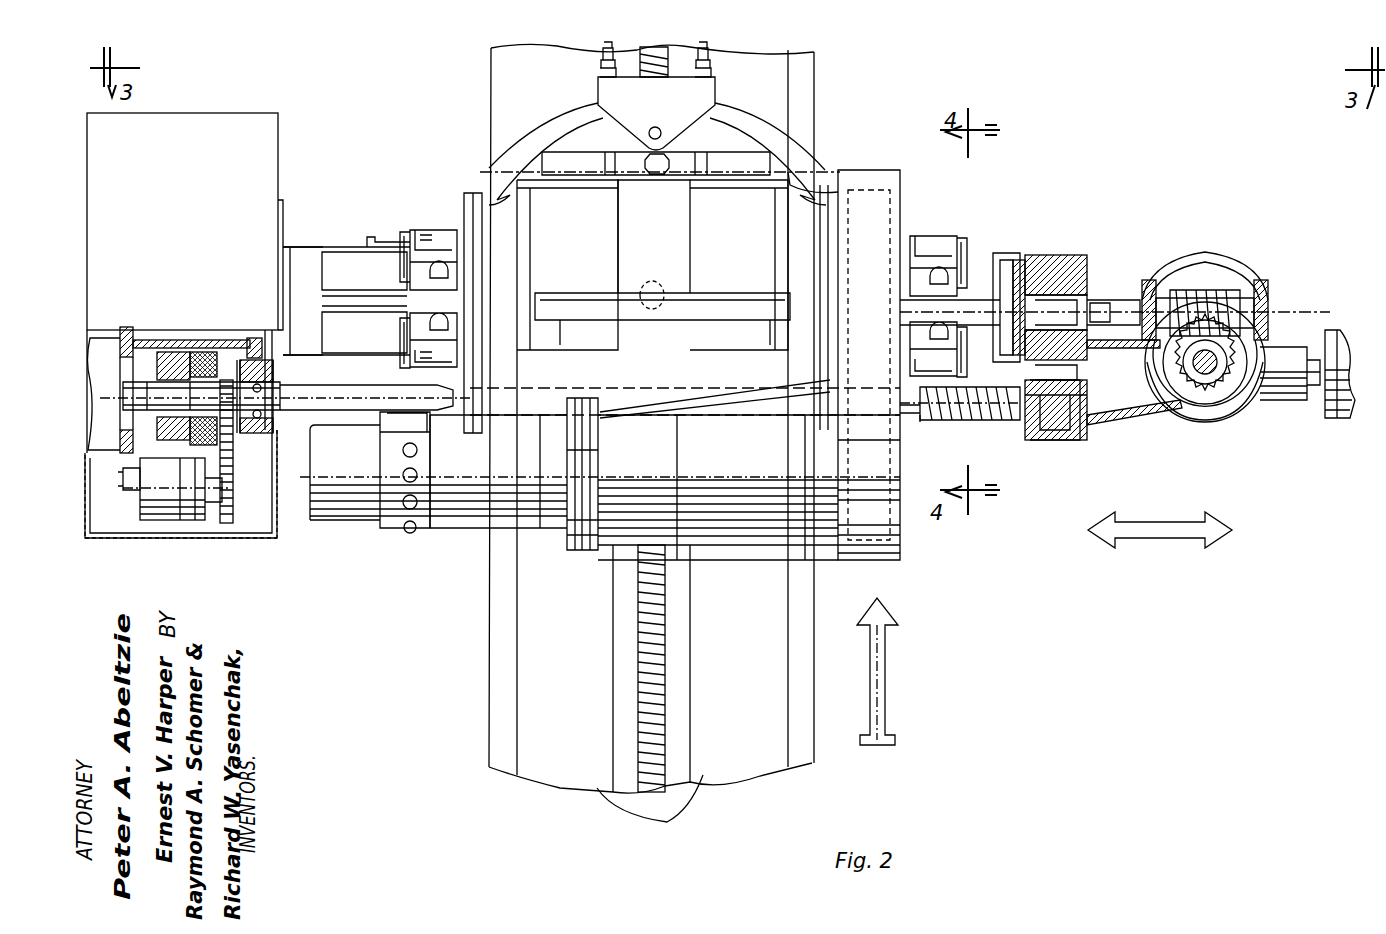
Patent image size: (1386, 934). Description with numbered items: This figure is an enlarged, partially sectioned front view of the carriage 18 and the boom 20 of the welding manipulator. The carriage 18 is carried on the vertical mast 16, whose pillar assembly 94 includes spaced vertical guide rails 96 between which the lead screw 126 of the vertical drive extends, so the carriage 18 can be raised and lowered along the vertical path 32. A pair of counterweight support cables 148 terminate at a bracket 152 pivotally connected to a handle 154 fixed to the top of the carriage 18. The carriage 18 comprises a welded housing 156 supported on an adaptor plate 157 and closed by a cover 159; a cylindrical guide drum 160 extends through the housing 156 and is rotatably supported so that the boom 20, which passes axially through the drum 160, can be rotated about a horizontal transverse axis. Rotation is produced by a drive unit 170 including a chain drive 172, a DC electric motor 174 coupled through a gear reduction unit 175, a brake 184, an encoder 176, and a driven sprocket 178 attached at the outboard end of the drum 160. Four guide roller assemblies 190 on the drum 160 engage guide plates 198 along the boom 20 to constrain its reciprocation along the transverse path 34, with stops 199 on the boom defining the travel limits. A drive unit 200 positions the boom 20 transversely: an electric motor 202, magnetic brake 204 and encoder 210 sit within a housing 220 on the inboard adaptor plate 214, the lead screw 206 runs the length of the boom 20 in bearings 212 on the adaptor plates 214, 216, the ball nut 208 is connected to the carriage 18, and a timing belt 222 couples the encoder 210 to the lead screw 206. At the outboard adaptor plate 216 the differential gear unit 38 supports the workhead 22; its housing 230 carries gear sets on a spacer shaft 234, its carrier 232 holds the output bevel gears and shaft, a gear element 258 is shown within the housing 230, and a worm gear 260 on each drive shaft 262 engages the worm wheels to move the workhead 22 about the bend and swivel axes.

The vertical mast 16 is at (482, 725).
The carriage 18 is at (462, 587).
The boom 20 is at (292, 242).
The workhead 22 is at (1345, 418).
The vertical path 32 is at (882, 700).
The transverse path 34 is at (1175, 535).
The differential gear unit 38 is at (1185, 250).
The pillar assembly 94 is at (489, 638).
The guide rails 96 is at (650, 814).
The lead screw 126 is at (660, 722).
The support cables 148 is at (602, 52).
The bracket 152 is at (625, 87).
The handle 154 is at (518, 148).
The welded housing 156 is at (828, 187).
The adaptor plate 157 is at (500, 212).
The cover 159 is at (805, 163).
The guide drum 160 is at (470, 195).
The drive unit 170 is at (385, 535).
The chain drive 172 is at (866, 560).
The electric motor 174 is at (470, 500).
The gear reduction unit 175 is at (748, 520).
The encoder 176 is at (583, 300).
The driven sprocket 178 is at (896, 522).
The brake 184 is at (567, 520).
The guide roller assemblies 190 is at (420, 236).
The guide plates 198 is at (320, 356).
The stops 199 is at (395, 237).
The drive unit 200 is at (108, 462).
The electric motor 202 is at (103, 338).
The magnetic brake 204 is at (168, 352).
The lead screw 206 is at (322, 412).
The ball nut 208 is at (932, 420).
The encoder 210 is at (172, 507).
The bearings 212 is at (255, 437).
The inboard adaptor plate 214 is at (253, 340).
The outboard adaptor plate 216 is at (1058, 262).
The housing 220 is at (208, 130).
The timing belt 222 is at (228, 525).
The housing 230 is at (1168, 410).
The carrier 232 is at (1290, 380).
The spacer shaft 234 is at (1212, 372).
The worm gear 258 is at (1220, 346).
The worm gear 260 is at (1232, 302).
The drive shaft 262 is at (1005, 300).